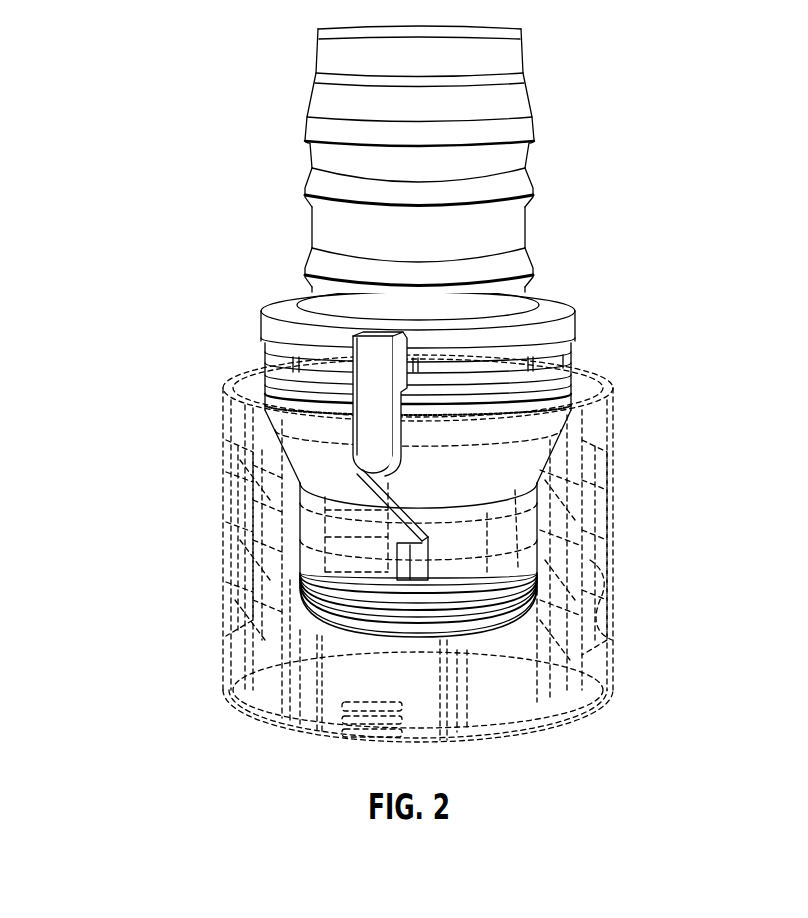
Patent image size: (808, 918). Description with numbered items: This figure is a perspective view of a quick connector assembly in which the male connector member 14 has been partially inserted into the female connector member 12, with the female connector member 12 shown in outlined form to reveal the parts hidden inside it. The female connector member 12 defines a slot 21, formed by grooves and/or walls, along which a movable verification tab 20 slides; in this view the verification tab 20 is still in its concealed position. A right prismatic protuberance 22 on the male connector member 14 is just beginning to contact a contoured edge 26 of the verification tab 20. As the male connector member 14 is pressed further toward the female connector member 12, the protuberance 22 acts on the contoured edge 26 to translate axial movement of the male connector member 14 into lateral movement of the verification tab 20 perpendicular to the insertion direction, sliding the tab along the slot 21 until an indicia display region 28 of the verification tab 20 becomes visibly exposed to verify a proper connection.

The female connector member 12 is at (600, 603).
The male connector member 14 is at (512, 98).
The verification tab 20 is at (302, 493).
The slot 21 is at (303, 470).
The protuberance 22 is at (377, 353).
The contoured edge 26 is at (357, 482).
The indicia display region 28 is at (427, 579).